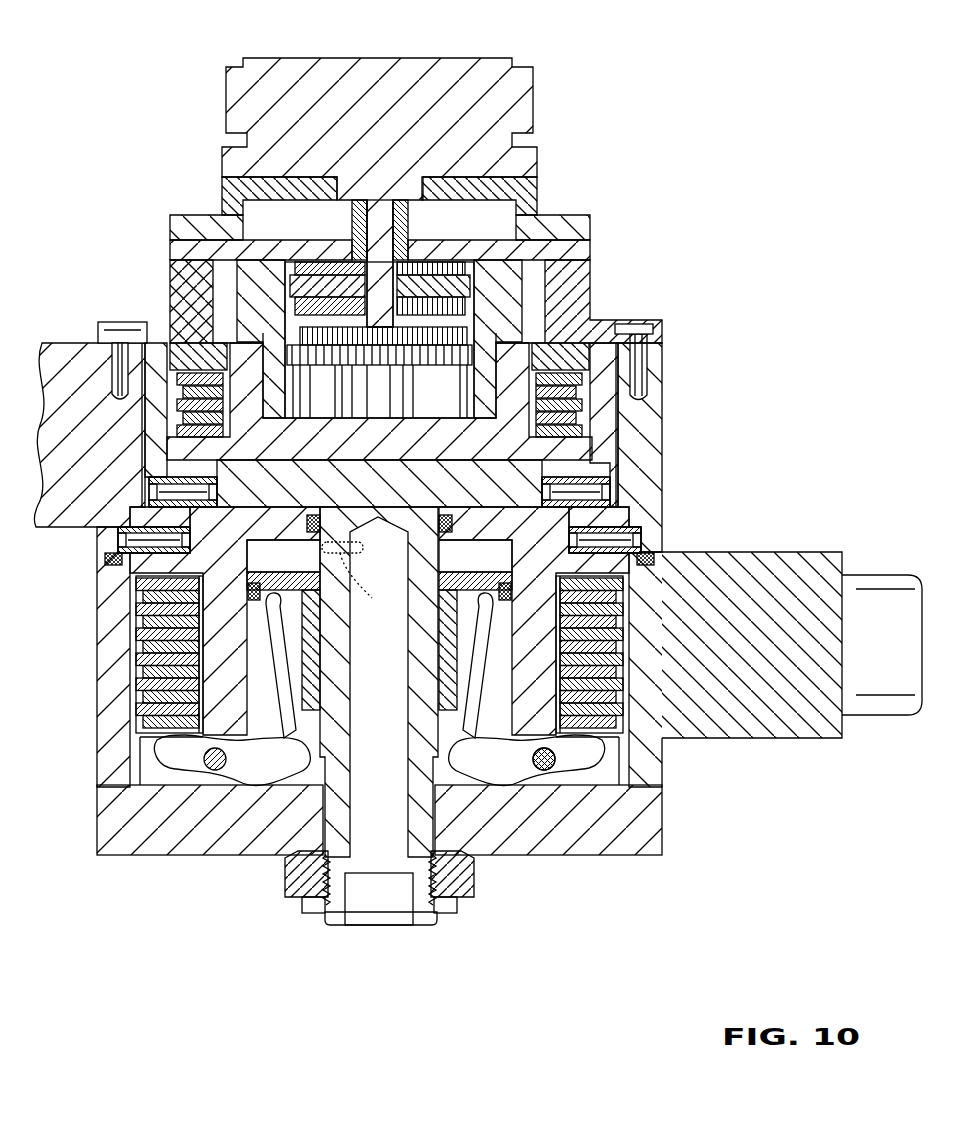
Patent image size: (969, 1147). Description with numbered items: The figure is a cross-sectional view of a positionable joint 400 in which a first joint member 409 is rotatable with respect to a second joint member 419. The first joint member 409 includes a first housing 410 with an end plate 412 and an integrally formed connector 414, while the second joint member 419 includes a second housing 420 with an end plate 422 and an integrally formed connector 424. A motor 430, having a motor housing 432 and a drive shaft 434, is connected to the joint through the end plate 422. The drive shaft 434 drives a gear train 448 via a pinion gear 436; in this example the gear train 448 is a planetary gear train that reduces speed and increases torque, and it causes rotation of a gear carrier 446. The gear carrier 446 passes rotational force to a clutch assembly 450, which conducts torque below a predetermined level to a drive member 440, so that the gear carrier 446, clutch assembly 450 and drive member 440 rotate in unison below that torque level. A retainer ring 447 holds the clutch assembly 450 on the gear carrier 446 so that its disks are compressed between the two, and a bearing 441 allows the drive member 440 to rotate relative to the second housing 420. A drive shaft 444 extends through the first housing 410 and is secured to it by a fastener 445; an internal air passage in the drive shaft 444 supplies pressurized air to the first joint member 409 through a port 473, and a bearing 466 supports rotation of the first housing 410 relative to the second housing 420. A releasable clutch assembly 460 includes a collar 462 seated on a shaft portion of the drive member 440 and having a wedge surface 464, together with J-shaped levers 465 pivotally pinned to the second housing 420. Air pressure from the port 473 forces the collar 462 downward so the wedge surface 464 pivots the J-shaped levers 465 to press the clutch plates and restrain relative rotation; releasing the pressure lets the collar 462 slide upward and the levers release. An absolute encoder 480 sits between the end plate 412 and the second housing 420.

The positionable joint 400 is at (464, 511).
The motor 430 is at (535, 82).
The motor housing 432 is at (535, 162).
The end plate 422 is at (590, 240).
The pinion gear 436 is at (352, 230).
The drive shaft 434 is at (382, 228).
The gear train 448 is at (234, 299).
The connector 424 is at (57, 341).
The retainer ring 447 is at (634, 330).
The second joint member 419 is at (460, 416).
The second housing 420 is at (660, 369).
The clutch assembly 450 is at (598, 400).
The gear carrier 446 is at (585, 447).
The drive member 440 is at (605, 465).
The bearing 441 is at (603, 507).
The connector 414 is at (775, 552).
The collar 462 is at (302, 570).
The bearing 466 is at (122, 545).
The releasable clutch assembly 460 is at (130, 638).
The port 473 is at (379, 682).
The first joint member 409 is at (334, 700).
The first housing 410 is at (108, 698).
The wedge surface 464 is at (510, 633).
The J-shaped lever 465 is at (168, 750).
The absolute encoder 480 is at (500, 790).
The fastener 445 is at (471, 881).
The end plate 412 is at (635, 846).
The drive shaft 444 is at (420, 928).